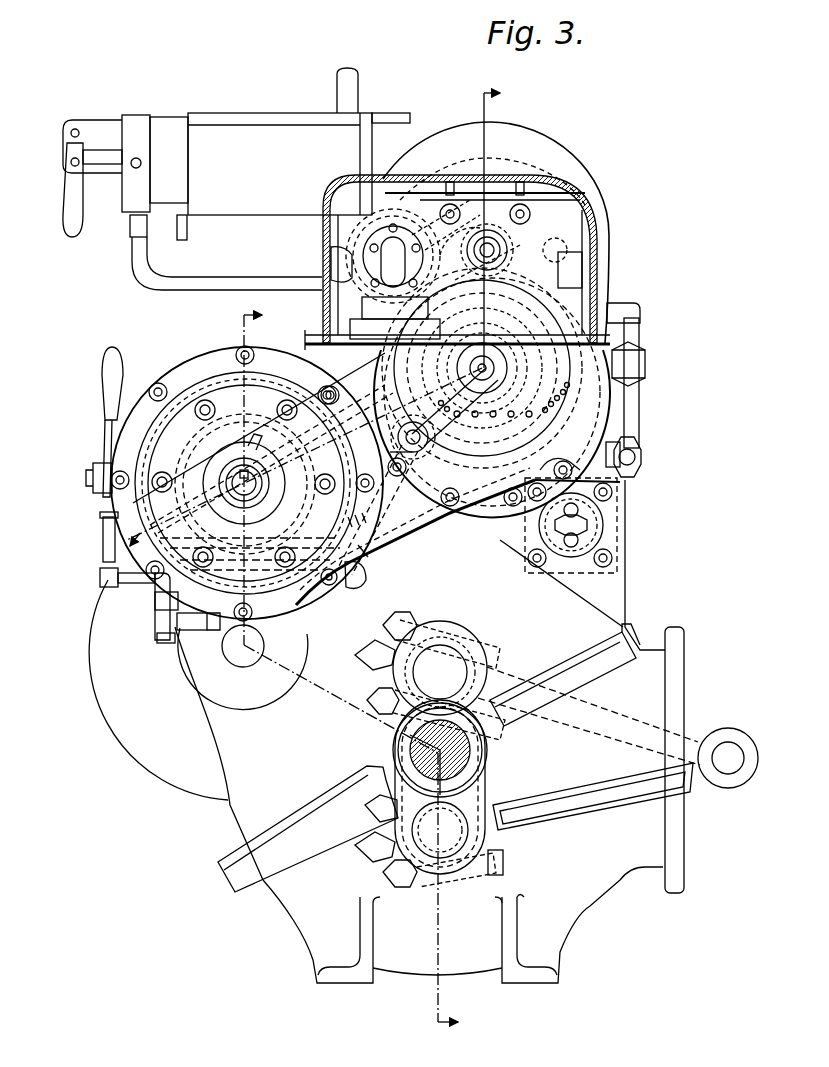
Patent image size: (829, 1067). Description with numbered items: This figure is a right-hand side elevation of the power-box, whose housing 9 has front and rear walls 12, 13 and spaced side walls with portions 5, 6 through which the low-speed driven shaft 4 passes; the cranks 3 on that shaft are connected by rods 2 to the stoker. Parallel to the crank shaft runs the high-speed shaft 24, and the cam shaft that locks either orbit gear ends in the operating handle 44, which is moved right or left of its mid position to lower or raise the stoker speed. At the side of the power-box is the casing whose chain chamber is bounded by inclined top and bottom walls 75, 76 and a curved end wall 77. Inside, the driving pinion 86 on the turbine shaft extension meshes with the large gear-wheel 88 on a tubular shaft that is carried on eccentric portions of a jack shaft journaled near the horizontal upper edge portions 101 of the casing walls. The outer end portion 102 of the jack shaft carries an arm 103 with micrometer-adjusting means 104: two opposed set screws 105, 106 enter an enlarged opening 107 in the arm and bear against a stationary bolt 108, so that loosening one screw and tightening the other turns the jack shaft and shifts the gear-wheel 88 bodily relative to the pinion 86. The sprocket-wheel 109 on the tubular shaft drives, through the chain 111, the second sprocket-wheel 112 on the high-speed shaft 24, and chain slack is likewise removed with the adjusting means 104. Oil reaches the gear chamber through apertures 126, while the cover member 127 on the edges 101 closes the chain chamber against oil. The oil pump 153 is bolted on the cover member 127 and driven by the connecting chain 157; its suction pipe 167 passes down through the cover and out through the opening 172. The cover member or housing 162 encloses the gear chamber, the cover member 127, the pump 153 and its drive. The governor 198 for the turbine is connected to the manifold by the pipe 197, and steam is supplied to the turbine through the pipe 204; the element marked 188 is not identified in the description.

The rods 2 is at (610, 705).
The cranks 3 is at (480, 833).
The driven shaft 4 is at (470, 762).
The portion of side wall 5 is at (321, 325).
The portion of side wall 6 is at (359, 669).
The housing 9 is at (305, 905).
The front wall 12 is at (226, 815).
The rear wall 13 is at (605, 905).
The high-speed shaft 24 is at (272, 490).
The operating handle 44 is at (102, 370).
The inclined top wall 75 is at (282, 356).
The inclined bottom wall 76 is at (438, 518).
The curved end wall 77 is at (135, 504).
The driving pinion 86 is at (487, 247).
The gear-wheel 88 is at (562, 391).
The horizontal upper edge portions 101 is at (494, 368).
The outer end portion of jack shaft 102 is at (486, 368).
The arm 103 is at (448, 410).
The micrometer-adjusting means 104 is at (362, 505).
The set screw 105 is at (387, 437).
The set screw 106 is at (448, 440).
The enlarged opening 107 is at (383, 483).
The stationary bolt 108 is at (376, 462).
The sprocket-wheel 109 is at (482, 371).
The chain 111 is at (353, 519).
The second sprocket-wheel 112 is at (290, 505).
The apertures 126 is at (634, 432).
The cover member 127 is at (482, 368).
The oil pump 153 is at (383, 242).
The connecting chain 157 is at (480, 253).
The cover member or housing 162 is at (548, 178).
The suction pipe 167 is at (543, 263).
The opening 172 is at (640, 414).
The bolt 188 is at (398, 245).
The pipe 197 is at (212, 290).
The governor 198 is at (163, 140).
The pipe 204 is at (358, 93).